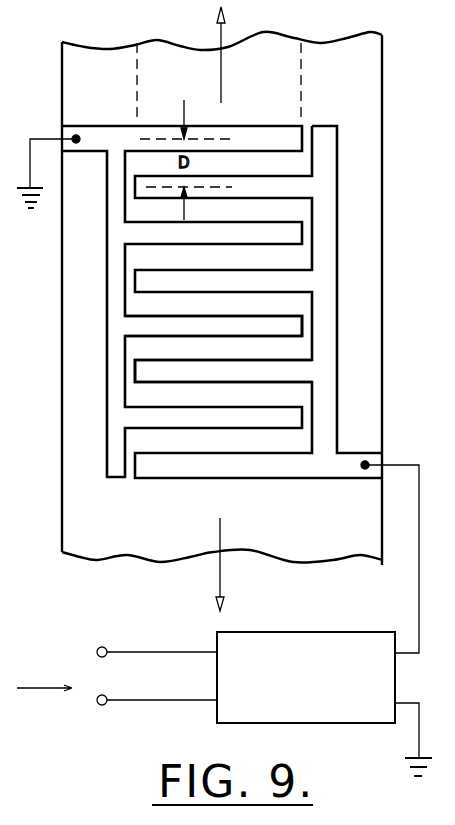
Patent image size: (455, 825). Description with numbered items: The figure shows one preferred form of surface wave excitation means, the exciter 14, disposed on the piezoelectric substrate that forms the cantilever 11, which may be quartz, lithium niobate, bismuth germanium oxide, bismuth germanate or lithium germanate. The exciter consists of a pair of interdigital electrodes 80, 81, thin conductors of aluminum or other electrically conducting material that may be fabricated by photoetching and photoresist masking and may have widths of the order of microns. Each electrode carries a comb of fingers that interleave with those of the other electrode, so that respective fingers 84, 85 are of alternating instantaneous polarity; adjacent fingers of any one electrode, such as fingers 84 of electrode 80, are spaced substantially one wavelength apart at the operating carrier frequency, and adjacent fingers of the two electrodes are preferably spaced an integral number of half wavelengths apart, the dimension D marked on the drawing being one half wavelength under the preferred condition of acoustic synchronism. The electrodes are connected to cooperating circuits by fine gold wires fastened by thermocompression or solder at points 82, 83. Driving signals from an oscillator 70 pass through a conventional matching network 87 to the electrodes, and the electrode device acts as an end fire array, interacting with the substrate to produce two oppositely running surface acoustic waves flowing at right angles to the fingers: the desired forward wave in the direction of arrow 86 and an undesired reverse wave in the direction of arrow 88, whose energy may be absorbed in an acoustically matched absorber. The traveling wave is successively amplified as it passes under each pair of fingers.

The cantilever 11 is at (76, 396).
The exciter 14 is at (343, 156).
The electrode 80 is at (112, 256).
The electrode 81 is at (320, 279).
The connection point 82 is at (88, 136).
The connection point 83 is at (348, 462).
The finger 84 is at (302, 323).
The finger 85 is at (298, 362).
The arrow 86 is at (222, 78).
The matching network 87 is at (304, 631).
The arrow 88 is at (222, 538).
The oscillator 70 is at (173, 684).